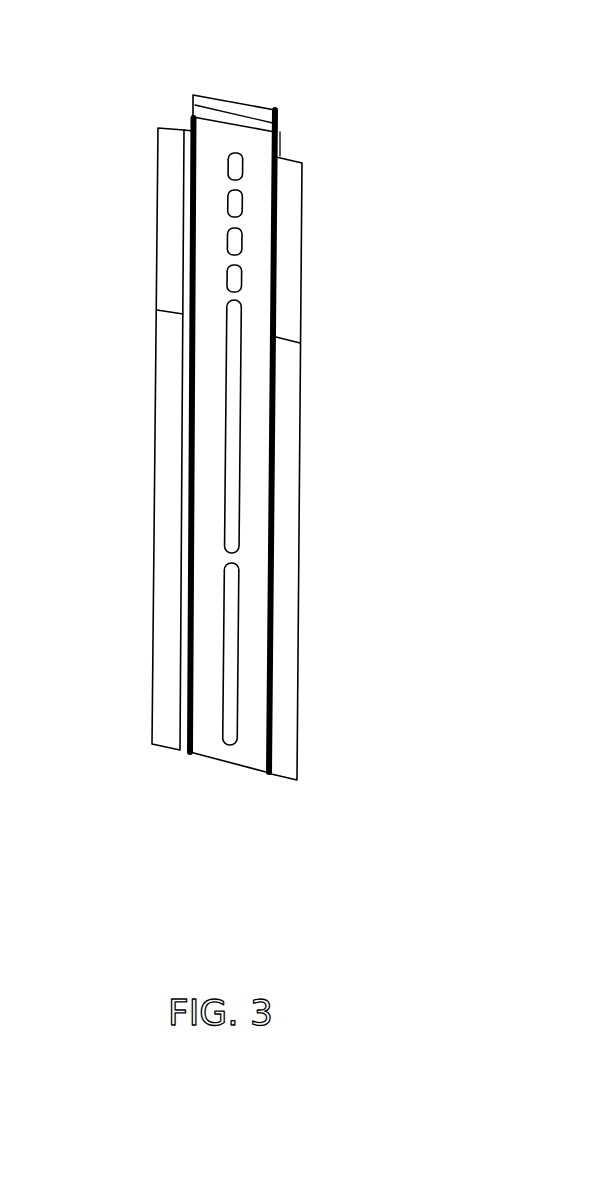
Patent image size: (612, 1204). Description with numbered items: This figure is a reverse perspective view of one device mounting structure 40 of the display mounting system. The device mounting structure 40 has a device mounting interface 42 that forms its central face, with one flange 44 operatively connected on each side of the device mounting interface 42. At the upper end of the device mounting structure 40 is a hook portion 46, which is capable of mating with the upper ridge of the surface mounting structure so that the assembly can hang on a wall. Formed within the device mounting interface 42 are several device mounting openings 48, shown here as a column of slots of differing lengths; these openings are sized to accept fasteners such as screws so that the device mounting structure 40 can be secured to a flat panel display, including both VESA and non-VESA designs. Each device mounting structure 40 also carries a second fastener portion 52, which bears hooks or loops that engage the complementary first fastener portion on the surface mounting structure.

The device mounting structure 40 is at (256, 427).
The device mounting interface 42 is at (240, 748).
The flange 44 is at (165, 655).
The hook portion 46 is at (240, 105).
The device mounting openings 48 is at (228, 160).
The second fastener portion 52 is at (170, 137).